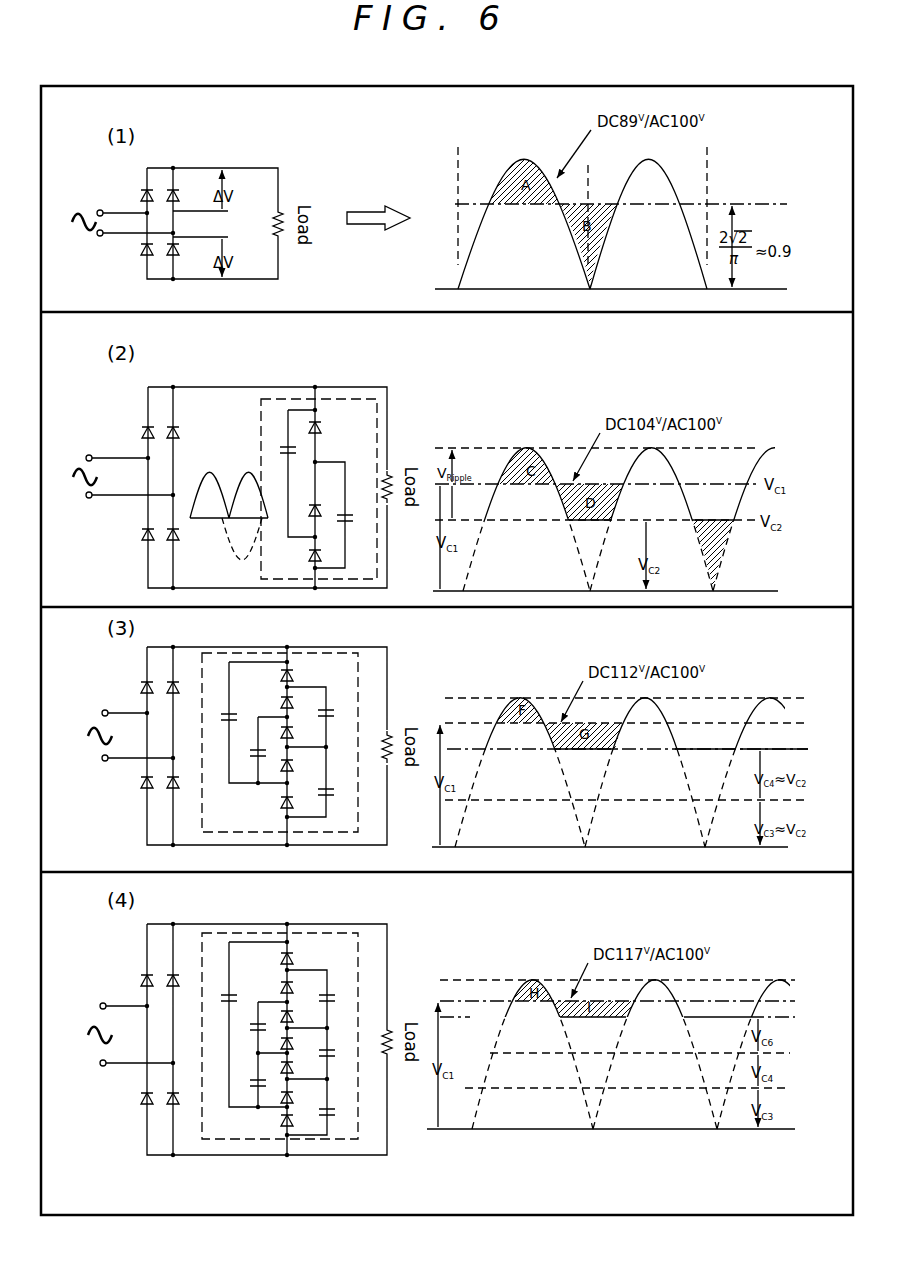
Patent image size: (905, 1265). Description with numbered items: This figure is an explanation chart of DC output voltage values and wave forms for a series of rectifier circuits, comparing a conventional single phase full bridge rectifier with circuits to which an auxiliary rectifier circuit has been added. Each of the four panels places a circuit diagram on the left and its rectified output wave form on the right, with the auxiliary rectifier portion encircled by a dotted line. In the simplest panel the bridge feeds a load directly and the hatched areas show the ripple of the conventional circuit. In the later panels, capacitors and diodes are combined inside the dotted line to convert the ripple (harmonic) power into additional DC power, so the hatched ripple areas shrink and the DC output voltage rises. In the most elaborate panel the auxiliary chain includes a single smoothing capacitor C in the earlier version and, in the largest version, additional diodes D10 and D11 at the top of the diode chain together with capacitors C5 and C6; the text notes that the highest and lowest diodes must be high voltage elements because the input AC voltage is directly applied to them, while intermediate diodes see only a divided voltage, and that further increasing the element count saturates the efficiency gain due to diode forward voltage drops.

The diode D10 is at (271, 988).
The diode D11 is at (271, 960).
The capacitor C is at (346, 514).
The capacitor C5 is at (255, 1026).
The capacitor C6 is at (332, 996).